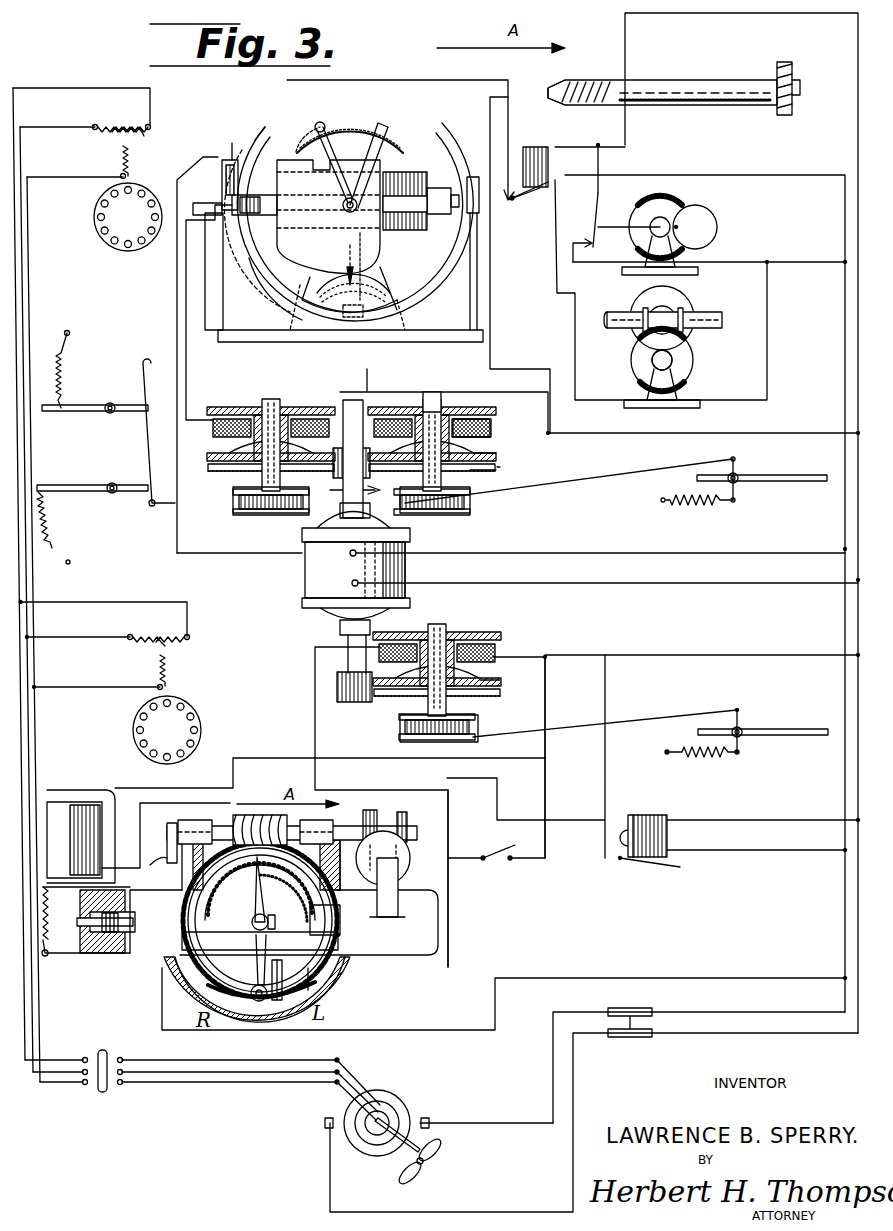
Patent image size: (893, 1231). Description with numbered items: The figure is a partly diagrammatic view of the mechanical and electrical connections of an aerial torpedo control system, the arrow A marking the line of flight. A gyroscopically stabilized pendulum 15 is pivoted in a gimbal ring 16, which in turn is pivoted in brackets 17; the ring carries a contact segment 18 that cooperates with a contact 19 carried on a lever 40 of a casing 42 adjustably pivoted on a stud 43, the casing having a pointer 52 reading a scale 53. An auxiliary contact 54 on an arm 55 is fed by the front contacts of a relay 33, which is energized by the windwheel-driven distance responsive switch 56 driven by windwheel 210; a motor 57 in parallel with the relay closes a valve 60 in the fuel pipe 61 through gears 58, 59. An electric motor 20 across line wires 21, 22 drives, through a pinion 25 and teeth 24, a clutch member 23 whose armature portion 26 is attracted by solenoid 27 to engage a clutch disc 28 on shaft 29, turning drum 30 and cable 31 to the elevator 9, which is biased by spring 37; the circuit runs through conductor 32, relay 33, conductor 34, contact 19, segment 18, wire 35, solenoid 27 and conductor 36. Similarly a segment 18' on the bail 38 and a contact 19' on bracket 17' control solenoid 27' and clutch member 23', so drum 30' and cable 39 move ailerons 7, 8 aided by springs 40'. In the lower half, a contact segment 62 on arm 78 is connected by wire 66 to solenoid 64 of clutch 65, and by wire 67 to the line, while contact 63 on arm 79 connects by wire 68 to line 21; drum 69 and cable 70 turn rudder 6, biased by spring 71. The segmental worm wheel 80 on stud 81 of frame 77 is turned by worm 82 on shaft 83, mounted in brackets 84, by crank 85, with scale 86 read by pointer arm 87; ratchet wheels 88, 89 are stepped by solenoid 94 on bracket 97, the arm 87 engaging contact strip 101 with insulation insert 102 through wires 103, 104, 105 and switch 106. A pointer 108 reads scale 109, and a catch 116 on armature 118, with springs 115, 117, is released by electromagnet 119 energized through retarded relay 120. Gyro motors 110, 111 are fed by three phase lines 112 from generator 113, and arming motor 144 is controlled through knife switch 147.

The steering rudder 6 is at (786, 728).
The aileron 7 is at (75, 492).
The aileron 8 is at (95, 397).
The elevator 9 is at (780, 484).
The gyroscopically stabilized pendulum 15 is at (420, 222).
The gimbal ring 16 is at (430, 192).
The brackets 17 is at (344, 232).
The bracket 17' is at (232, 261).
The contact segment 18 is at (368, 165).
The contact segment 18' is at (246, 185).
The contact 19 is at (350, 124).
The contact 19' is at (242, 139).
The electric motor 20 is at (407, 567).
The line wire 21 is at (845, 600).
The line wire 22 is at (845, 530).
The clutch member 23 is at (502, 443).
The clutch member 23' is at (195, 434).
The teeth 24 is at (498, 468).
The pinion 25 is at (364, 471).
The armature portion 26 is at (496, 403).
The solenoid 27 is at (489, 421).
The solenoid 27' is at (271, 446).
The clutch disc 28 is at (483, 476).
The shaft 29 is at (432, 400).
The drum 30 is at (442, 512).
The drum 30' is at (271, 514).
The cord or cable 31 is at (625, 473).
The conductor 32 is at (775, 178).
The relay 33 is at (549, 162).
The conductor 34 is at (510, 128).
The wire 35 is at (491, 240).
The conductor 36 is at (703, 444).
The spring 37 is at (703, 506).
The bail 38 is at (258, 231).
The cable 39 is at (165, 505).
The lever 40 is at (53, 535).
The springs 40' is at (83, 370).
The casing 42 is at (328, 216).
The stud 43 is at (356, 210).
The pointer 52 is at (342, 240).
The scale 53 is at (353, 275).
The auxiliary contact 54 is at (311, 123).
The arm 55 is at (338, 190).
The distance responsive switch 56 is at (675, 80).
The motor 57 is at (695, 366).
The gear 58 is at (652, 372).
The gear 59 is at (693, 306).
The valve 60 is at (662, 333).
The fuel-supply pipe 61 is at (612, 314).
The contact segment 62 is at (285, 980).
The contact 63 is at (245, 989).
The solenoid 64 is at (500, 642).
The clutch 65 is at (495, 670).
The wire 66 is at (449, 923).
The wire 67 is at (670, 660).
The wire 68 is at (398, 1032).
The drum 69 is at (402, 738).
The cable 70 is at (656, 714).
The spring 71 is at (700, 758).
The frame 77 is at (284, 922).
The arm 78 is at (250, 962).
The arm 79 is at (270, 962).
The segmental worm wheel 80 is at (183, 903).
The stud 81 is at (260, 943).
The worm 82 is at (257, 815).
The shaft 83 is at (210, 824).
The brackets 84 is at (182, 880).
The crank 85 is at (166, 850).
The scale 86 is at (215, 875).
The pointer arm 87 is at (252, 920).
The ratchet wheel 88 is at (370, 818).
The ratchet wheel 89 is at (408, 817).
The solenoid 94 is at (405, 850).
The bracket 97 is at (398, 902).
The contact strip 101 is at (290, 916).
The insert of insulation 102 is at (274, 889).
The wire 103 is at (338, 938).
The wire 104 is at (340, 895).
The wire 105 is at (547, 695).
The switch 106 is at (466, 856).
The pointer 108 is at (270, 1020).
The scale 109 is at (335, 1000).
The three phase induction motor 110 is at (118, 152).
The three phase induction motor 111 is at (104, 645).
The three phase lines 112 is at (34, 731).
The double current wind-driven generator 113 is at (412, 1105).
The spring 115 is at (120, 930).
The catch 116 is at (78, 940).
The spring 117 is at (52, 955).
The armature 118 is at (86, 913).
The electromagnet 119 is at (81, 836).
The retarded relay 120 is at (668, 833).
The motor 144 is at (690, 210).
The knife switch 147 is at (616, 223).
The windwheel 210 is at (795, 66).